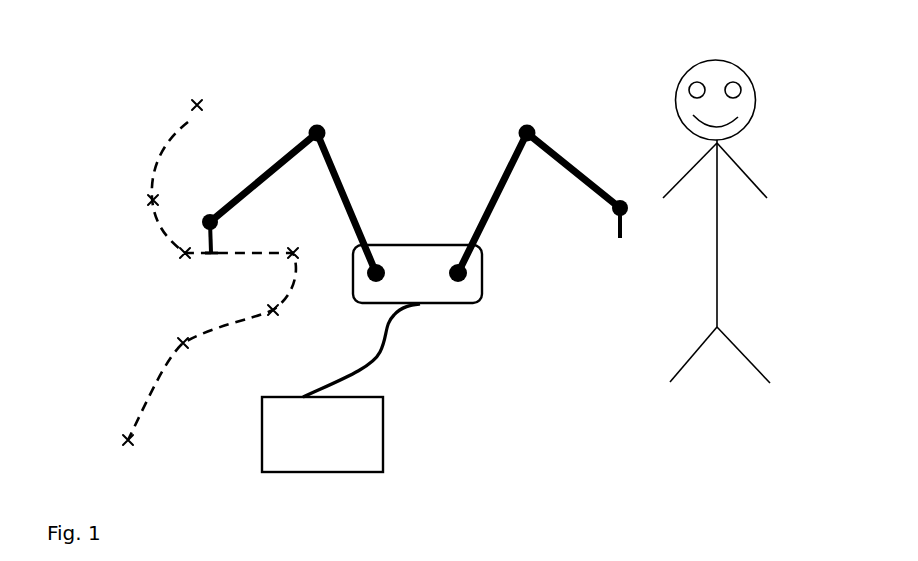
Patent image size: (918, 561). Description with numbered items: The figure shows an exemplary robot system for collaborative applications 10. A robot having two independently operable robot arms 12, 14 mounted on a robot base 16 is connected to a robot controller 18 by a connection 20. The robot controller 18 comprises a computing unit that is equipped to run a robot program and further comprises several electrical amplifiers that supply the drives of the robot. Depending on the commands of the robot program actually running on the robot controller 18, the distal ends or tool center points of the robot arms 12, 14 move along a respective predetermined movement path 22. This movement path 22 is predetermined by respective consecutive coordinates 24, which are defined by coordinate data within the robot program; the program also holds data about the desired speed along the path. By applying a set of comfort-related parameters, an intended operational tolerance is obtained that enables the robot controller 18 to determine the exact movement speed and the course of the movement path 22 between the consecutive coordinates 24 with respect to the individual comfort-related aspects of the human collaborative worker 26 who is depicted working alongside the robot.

The robot system for collaborative applications 10 is at (493, 312).
The robot arm 12 is at (340, 182).
The robot arm 14 is at (510, 188).
The robot base 16 is at (475, 303).
The robot controller 18 is at (383, 433).
The connection 20 is at (388, 333).
The movement path 22 is at (188, 122).
The consecutive coordinates 24 is at (178, 337).
The human collaborative worker 26 is at (718, 253).